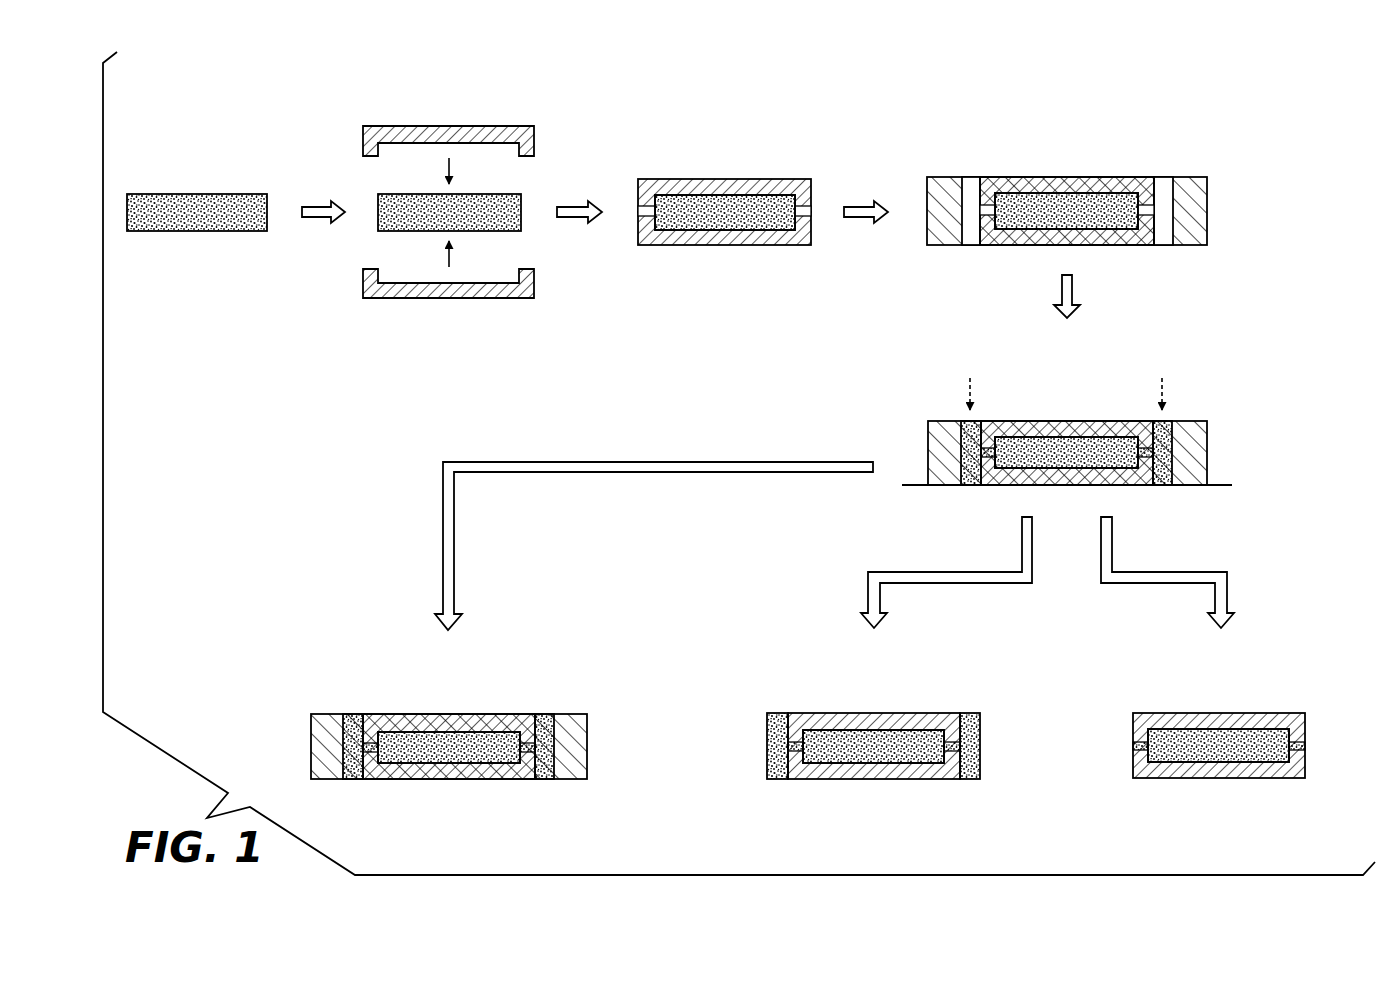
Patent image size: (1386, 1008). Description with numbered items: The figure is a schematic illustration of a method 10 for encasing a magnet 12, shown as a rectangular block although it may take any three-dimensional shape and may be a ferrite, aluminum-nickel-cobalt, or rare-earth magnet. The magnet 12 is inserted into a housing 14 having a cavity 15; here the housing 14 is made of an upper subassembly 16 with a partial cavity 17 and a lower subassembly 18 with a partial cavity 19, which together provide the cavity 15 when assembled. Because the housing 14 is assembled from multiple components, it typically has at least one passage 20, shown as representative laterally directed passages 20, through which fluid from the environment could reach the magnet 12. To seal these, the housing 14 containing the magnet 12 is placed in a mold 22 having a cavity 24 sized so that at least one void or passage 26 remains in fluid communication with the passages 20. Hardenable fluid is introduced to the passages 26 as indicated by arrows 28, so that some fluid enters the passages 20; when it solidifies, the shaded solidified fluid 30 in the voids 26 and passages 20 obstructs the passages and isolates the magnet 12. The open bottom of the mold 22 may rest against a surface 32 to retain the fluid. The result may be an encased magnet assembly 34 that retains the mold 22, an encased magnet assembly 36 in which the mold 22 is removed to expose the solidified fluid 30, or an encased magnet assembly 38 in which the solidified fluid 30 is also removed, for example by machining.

The method 10 is at (1332, 190).
The magnet 12 is at (183, 223).
The housing 14 is at (716, 410).
The cavity 15 is at (673, 231).
The upper subassembly 16 is at (449, 128).
The partial cavity 17 is at (424, 152).
The lower subassembly 18 is at (449, 300).
The partial cavity 19 is at (424, 273).
The passage 20 is at (645, 205).
The mold 22 is at (1207, 212).
The cavity 24 is at (972, 180).
The passage 26 is at (972, 245).
The arrows 28 is at (964, 385).
The solidified fluid 30 is at (970, 470).
The surface 32 is at (913, 487).
The encased magnet assembly 34 is at (397, 686).
The encased magnet assembly 36 is at (820, 686).
The encased magnet assembly 38 is at (1165, 686).